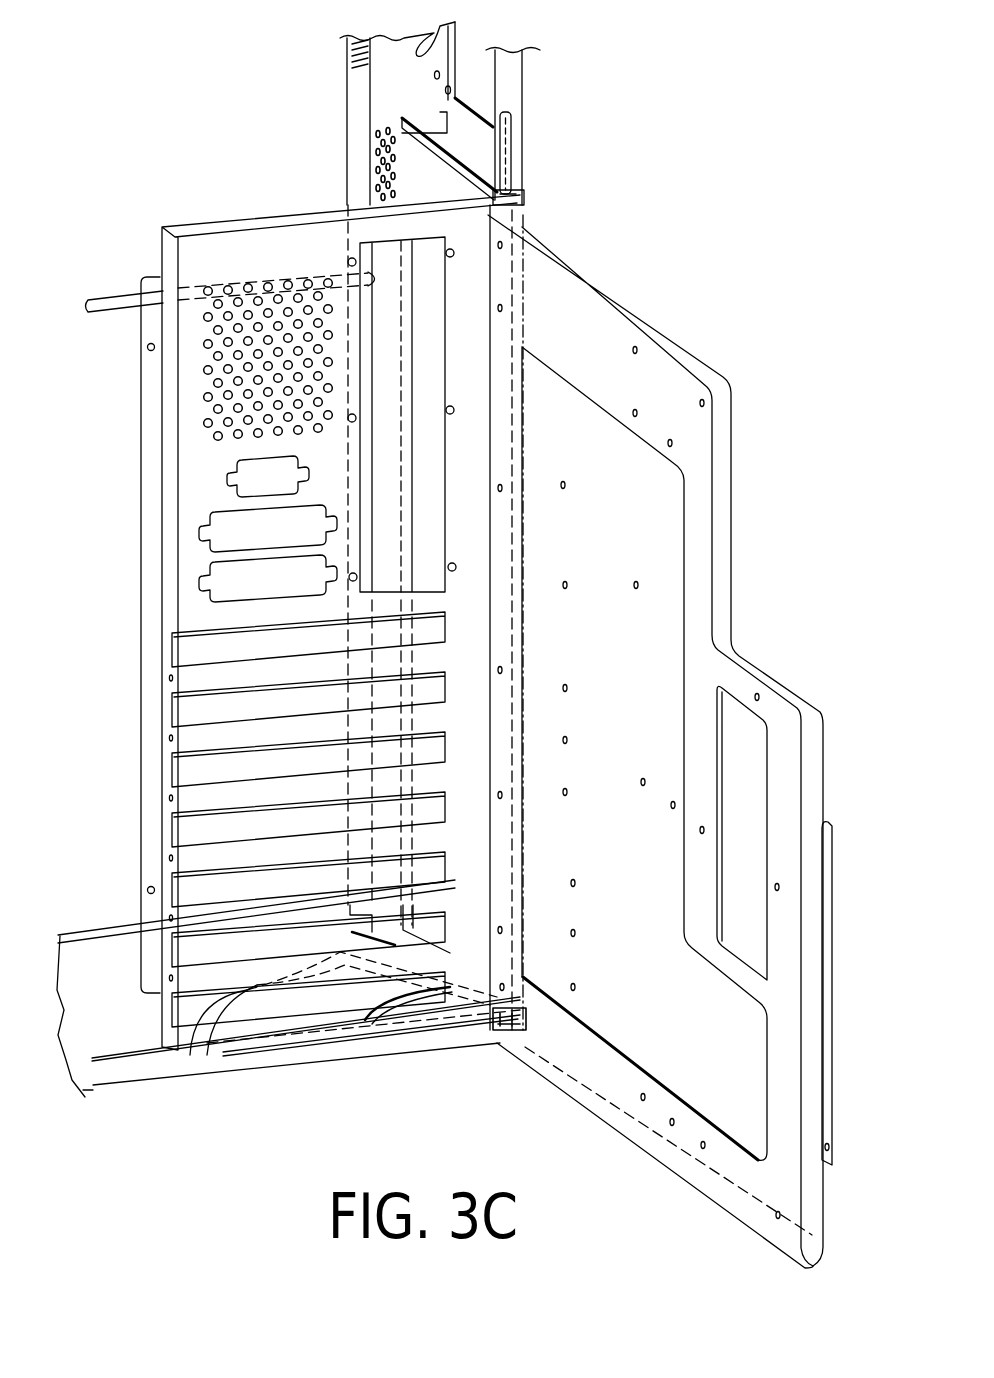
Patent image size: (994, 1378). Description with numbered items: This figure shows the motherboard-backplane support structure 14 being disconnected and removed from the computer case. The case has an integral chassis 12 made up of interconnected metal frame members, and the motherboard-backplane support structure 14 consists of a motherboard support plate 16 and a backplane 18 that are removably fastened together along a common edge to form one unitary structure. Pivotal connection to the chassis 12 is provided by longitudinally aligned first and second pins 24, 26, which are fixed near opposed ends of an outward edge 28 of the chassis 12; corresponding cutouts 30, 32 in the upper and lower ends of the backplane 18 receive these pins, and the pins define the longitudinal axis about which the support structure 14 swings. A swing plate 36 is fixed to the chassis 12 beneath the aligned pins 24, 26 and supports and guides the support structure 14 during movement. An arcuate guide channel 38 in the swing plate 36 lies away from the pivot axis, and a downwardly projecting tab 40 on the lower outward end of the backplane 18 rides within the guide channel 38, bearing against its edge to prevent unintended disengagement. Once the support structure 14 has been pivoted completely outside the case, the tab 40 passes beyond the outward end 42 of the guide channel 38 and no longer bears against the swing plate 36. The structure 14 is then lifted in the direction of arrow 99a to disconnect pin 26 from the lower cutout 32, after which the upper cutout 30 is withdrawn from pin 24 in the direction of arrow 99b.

The chassis 12 is at (355, 90).
The motherboard-backplane support structure 14 is at (452, 655).
The motherboard support plate 16 is at (693, 458).
The backplane 18 is at (295, 247).
The first pin 24 is at (503, 177).
The second pin 26 is at (462, 1100).
The outward edge 28 is at (512, 84).
The cutout 30 is at (526, 205).
The cutout 32 is at (497, 1027).
The swing plate 36 is at (343, 1003).
The arcuate guide channel 38 is at (205, 1015).
The downwardly projecting tab 40 is at (212, 1063).
The outward end 42 is at (255, 1063).
The arrow 99a is at (118, 656).
The arrow 99b is at (240, 197).